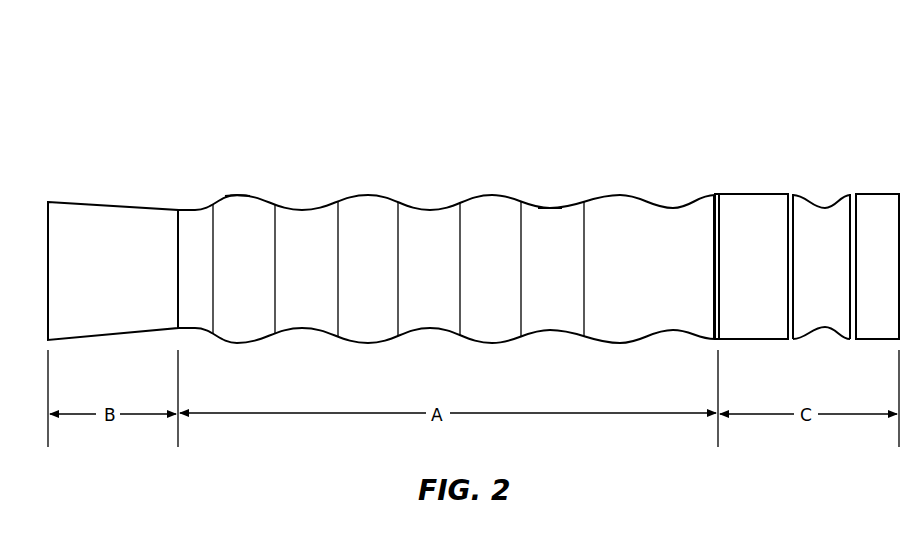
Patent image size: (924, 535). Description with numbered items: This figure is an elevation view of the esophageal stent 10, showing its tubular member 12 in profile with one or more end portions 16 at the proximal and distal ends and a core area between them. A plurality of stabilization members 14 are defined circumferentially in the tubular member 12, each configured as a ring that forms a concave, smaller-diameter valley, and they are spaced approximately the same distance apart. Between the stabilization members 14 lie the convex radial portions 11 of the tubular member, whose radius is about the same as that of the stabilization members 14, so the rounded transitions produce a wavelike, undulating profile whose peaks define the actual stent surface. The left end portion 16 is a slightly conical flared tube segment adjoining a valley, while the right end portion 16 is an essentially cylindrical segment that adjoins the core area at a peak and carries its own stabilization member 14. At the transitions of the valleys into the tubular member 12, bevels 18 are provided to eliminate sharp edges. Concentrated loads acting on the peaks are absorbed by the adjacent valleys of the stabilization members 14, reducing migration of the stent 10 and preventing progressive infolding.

The esophageal stent 10 is at (473, 198).
The radial portions 11 is at (235, 195).
The tubular member 12 is at (356, 194).
The stabilization members 14 is at (549, 208).
The end portions 16 is at (73, 202).
The bevel 18 is at (792, 206).